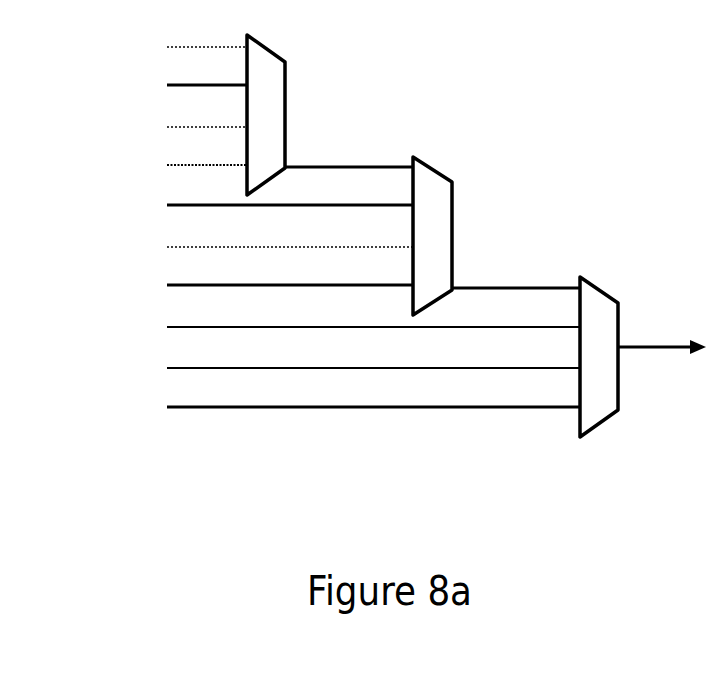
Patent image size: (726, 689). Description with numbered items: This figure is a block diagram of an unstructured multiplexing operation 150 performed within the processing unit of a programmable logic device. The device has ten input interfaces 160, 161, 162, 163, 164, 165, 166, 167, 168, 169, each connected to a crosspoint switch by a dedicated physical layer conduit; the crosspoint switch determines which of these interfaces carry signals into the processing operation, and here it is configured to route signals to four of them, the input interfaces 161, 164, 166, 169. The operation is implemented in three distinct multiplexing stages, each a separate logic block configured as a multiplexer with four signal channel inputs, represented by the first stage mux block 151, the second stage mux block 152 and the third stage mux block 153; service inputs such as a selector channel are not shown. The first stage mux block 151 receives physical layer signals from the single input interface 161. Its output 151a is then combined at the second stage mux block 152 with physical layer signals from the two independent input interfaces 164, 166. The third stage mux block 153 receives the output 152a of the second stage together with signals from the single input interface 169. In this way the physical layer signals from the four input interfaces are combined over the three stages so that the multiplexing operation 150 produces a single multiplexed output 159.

The unstructured multiplexing operation 150 is at (466, 430).
The first stage mux block 151 is at (288, 61).
The output from the first multiplexing stage 151a is at (293, 166).
The second stage mux block 152 is at (454, 181).
The output of the second multiplexing stage 152a is at (472, 287).
The third stage mux block 153 is at (620, 302).
The multiplexed output 159 is at (647, 353).
The input interface 160 is at (176, 45).
The input interface 161 is at (176, 83).
The input interface 162 is at (176, 125).
The input interface 163 is at (176, 163).
The input interface 164 is at (259, 203).
The input interface 165 is at (259, 245).
The input interface 166 is at (259, 283).
The input interface 167 is at (342, 325).
The input interface 168 is at (342, 366).
The input interface 169 is at (342, 405).